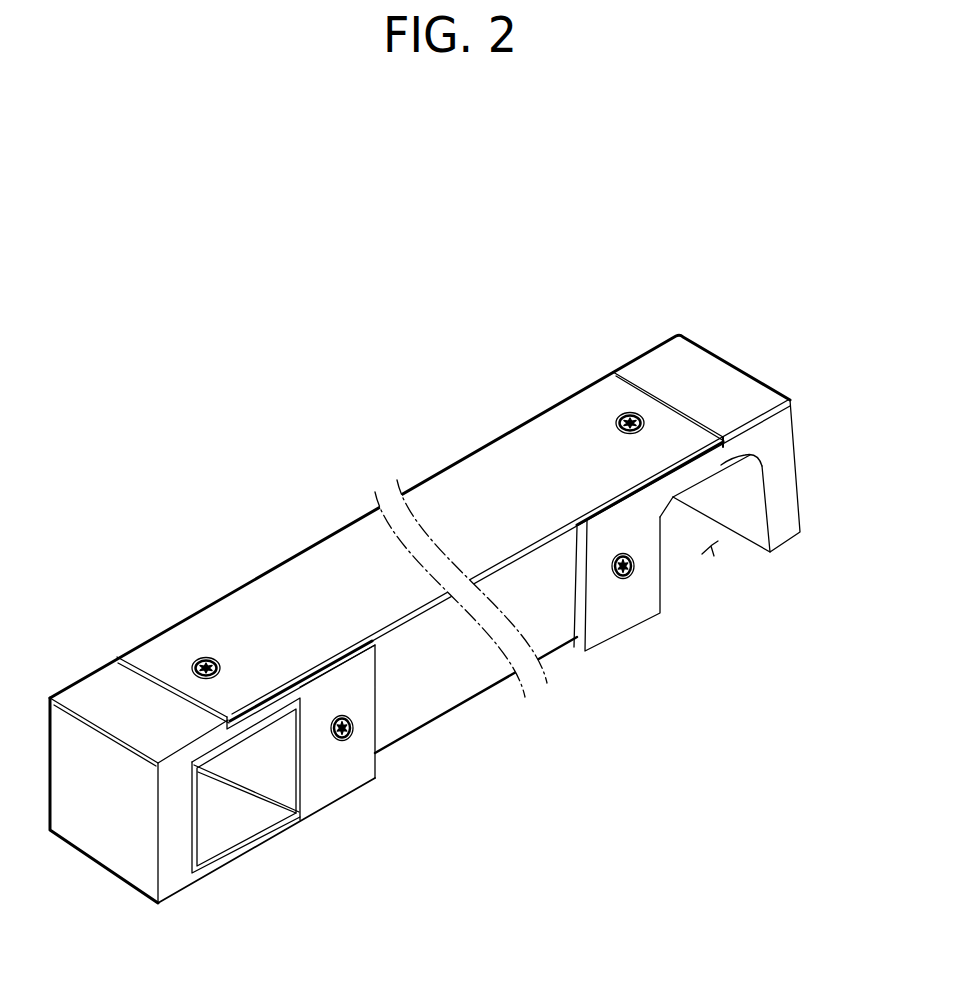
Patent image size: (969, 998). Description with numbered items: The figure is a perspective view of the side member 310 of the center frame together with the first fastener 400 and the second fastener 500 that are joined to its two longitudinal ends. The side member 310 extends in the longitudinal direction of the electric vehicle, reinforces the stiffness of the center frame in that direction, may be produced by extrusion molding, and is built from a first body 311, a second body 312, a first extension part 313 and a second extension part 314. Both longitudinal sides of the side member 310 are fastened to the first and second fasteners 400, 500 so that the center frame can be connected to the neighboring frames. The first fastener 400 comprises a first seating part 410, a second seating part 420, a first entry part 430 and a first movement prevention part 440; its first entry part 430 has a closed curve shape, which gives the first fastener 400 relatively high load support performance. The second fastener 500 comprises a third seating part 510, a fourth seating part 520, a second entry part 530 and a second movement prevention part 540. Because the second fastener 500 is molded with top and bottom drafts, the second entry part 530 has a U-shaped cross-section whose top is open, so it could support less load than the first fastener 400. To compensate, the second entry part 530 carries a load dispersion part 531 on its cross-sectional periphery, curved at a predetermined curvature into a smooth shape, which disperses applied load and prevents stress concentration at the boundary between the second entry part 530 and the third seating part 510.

The side member 310 is at (420, 544).
The first body 311 is at (417, 680).
The second body 312 is at (480, 515).
The first extension part 313 is at (248, 643).
The second extension part 314 is at (557, 400).
The first fastener 400 is at (240, 809).
The first seating part 410 is at (247, 710).
The second seating part 420 is at (363, 761).
The first entry part 430 is at (250, 793).
The first movement prevention part 440 is at (163, 727).
The second fastener 500 is at (711, 512).
The third seating part 510 is at (670, 500).
The fourth seating part 520 is at (630, 598).
The second entry part 530 is at (696, 481).
The load dispersion part 531 is at (722, 467).
The second movement prevention part 540 is at (733, 408).